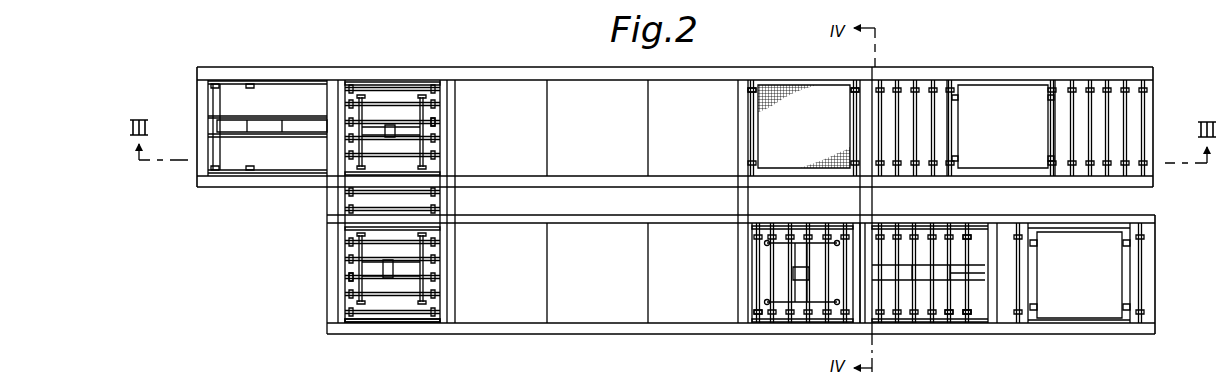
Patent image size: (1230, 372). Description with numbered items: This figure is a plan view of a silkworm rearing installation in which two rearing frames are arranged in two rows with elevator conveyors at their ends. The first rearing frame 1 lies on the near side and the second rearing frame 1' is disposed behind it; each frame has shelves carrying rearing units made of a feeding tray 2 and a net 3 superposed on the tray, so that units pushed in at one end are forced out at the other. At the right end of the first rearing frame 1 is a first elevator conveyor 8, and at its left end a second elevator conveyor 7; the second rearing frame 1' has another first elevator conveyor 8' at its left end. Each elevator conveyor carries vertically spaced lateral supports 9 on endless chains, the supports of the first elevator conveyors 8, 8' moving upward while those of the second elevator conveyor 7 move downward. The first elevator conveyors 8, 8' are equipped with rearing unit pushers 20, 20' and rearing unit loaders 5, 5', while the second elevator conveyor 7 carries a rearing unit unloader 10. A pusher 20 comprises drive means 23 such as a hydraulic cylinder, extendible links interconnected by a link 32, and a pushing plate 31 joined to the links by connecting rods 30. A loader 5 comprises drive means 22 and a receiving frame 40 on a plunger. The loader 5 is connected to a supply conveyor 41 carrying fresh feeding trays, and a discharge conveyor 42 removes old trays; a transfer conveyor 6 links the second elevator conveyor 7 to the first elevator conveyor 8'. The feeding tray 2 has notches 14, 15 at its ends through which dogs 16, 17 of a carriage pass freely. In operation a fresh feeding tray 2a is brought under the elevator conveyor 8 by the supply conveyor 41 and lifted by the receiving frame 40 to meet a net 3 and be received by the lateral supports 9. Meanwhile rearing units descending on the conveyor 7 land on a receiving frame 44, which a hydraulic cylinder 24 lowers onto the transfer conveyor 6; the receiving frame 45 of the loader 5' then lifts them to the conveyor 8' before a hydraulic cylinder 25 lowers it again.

The first rearing frame 1 is at (741, 291).
The second rearing frame 1' is at (675, 185).
The feeding tray 2 is at (1010, 95).
The fresh feeding tray 2a is at (1091, 312).
The net 3 is at (779, 99).
The rearing unit loader 5 is at (802, 256).
The rearing unit loader 5' is at (391, 102).
The rearing unit transfer conveyor 6 is at (344, 279).
The second elevator conveyor 7 is at (368, 323).
The first elevator conveyor 8 is at (571, 276).
The first elevator conveyor 8' is at (392, 104).
The lateral supports 9 is at (762, 321).
The rearing unit unloader 10 is at (419, 292).
The notches 14 is at (958, 158).
The notches 15 is at (1048, 158).
The dogs 16 is at (749, 86).
The dogs 17 is at (855, 94).
The rearing unit pusher 20 is at (966, 337).
The rearing unit pusher 20' is at (267, 104).
The drive means 22 is at (794, 273).
The drive means 23 is at (931, 283).
The hydraulic cylinder 24 is at (421, 270).
The hydraulic cylinder 25 is at (405, 137).
The connecting rods 30 is at (913, 230).
The pushing plate 31 is at (866, 240).
The link 32 is at (980, 244).
The receiving frame 40 is at (763, 244).
The supply conveyor 41 is at (1018, 321).
The discharge conveyor 42 is at (1077, 89).
The receiving frame 44 is at (358, 250).
The receiving frame 45 is at (436, 119).